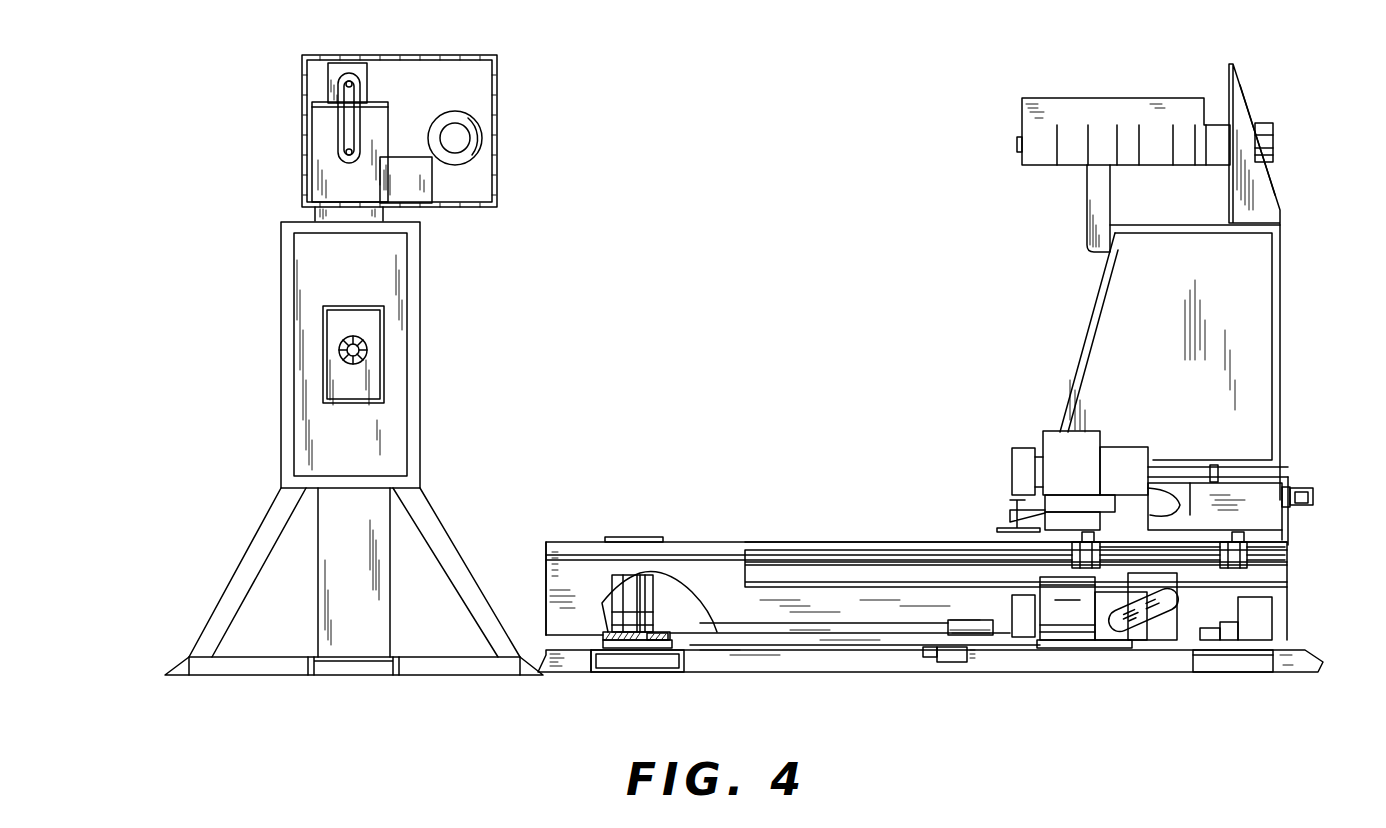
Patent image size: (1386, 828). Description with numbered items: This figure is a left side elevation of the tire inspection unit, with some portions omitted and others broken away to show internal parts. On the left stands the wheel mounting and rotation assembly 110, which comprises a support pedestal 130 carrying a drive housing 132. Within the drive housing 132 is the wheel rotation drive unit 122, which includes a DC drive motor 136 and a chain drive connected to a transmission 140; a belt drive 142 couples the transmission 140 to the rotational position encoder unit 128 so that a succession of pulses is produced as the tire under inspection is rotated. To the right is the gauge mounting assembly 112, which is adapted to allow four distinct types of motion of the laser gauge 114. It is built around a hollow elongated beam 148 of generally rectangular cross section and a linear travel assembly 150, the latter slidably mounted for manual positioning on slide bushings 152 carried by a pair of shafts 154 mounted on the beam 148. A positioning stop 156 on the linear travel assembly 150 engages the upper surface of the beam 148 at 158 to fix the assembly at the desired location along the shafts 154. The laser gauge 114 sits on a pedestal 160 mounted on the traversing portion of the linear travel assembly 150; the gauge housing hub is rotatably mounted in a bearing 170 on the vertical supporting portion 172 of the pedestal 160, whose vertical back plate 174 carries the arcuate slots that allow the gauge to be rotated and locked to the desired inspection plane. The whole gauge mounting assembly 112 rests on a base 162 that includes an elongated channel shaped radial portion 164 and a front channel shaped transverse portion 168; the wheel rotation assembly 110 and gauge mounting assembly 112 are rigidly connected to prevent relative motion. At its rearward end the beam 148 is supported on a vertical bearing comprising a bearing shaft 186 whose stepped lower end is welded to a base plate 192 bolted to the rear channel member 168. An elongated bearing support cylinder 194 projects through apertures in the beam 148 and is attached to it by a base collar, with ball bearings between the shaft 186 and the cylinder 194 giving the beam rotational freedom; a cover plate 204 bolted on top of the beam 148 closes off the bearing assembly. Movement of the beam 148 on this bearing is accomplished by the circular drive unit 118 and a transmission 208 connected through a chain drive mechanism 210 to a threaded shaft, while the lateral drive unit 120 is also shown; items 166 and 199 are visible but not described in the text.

The wheel mounting and rotation assembly 110 is at (433, 297).
The gauge mounting assembly 112 is at (882, 523).
The laser gauge 114 is at (1095, 98).
The circular drive unit 118 is at (1075, 625).
The lateral drive unit 120 is at (1088, 471).
The wheel rotation drive unit 122 is at (325, 178).
The rotational position encoder unit 128 is at (334, 70).
The support pedestal 130 is at (282, 575).
The drive housing 132 is at (450, 55).
The DC drive motor 136 is at (476, 124).
The transmission 140 is at (328, 141).
The belt drive 142 is at (362, 133).
The hollow elongated beam 148 is at (578, 542).
The linear travel assembly 150 is at (1262, 497).
The slide bushings 152 is at (1086, 546).
The shafts 154 is at (776, 549).
The positioning stop 156 is at (1003, 512).
The upper surface of beam 158 is at (952, 540).
The pedestal 160 is at (1118, 345).
The base 162 is at (878, 680).
The elongated channel shaped radial portion 164 is at (925, 663).
The foot 166 is at (1208, 657).
The front channel shaped transverse portion 168 is at (660, 664).
The bearing 170 is at (1275, 143).
The vertical supporting portion 172 is at (1268, 203).
The vertical back plate 174 is at (1228, 82).
The bearing shaft 186 is at (628, 582).
The base plate 192 is at (607, 635).
The bearing support cylinder 194 is at (655, 590).
The shim 199 is at (668, 620).
The cover plate 204 is at (622, 537).
The transmission 208 is at (1103, 642).
The chain drive mechanism 210 is at (1172, 606).